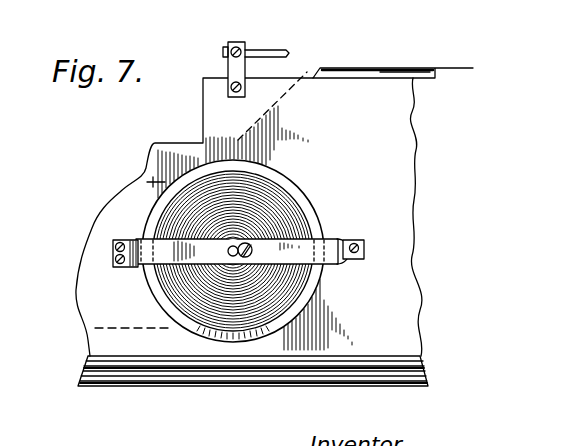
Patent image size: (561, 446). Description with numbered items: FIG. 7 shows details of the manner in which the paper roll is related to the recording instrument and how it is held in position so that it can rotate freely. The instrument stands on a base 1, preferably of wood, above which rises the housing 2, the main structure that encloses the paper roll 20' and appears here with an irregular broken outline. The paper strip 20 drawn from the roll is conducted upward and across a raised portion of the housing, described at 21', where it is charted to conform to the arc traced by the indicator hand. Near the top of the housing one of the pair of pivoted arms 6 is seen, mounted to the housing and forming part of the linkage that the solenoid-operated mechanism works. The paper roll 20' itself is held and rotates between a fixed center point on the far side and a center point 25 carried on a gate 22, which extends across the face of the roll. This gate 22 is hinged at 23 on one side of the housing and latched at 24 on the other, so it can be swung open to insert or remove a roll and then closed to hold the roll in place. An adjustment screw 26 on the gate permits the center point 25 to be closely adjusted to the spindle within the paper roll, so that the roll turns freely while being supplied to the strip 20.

The base 1 is at (400, 371).
The housing 2 is at (387, 140).
The arm 6 is at (263, 52).
The paper strip 20 is at (389, 53).
The raised portion of the housing 21' is at (399, 94).
The paper roll 20' is at (198, 250).
The gate 22 is at (163, 256).
The hinge 23 is at (130, 248).
The latch 24 is at (362, 255).
The center point 25 is at (228, 250).
The adjustment screw 26 is at (252, 252).